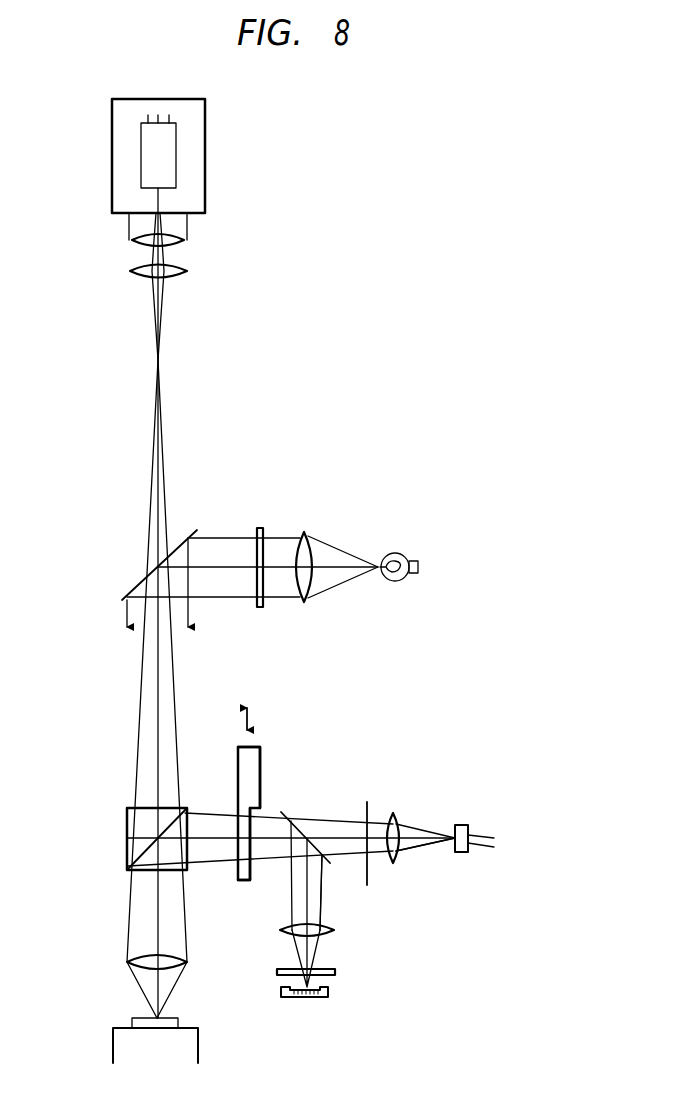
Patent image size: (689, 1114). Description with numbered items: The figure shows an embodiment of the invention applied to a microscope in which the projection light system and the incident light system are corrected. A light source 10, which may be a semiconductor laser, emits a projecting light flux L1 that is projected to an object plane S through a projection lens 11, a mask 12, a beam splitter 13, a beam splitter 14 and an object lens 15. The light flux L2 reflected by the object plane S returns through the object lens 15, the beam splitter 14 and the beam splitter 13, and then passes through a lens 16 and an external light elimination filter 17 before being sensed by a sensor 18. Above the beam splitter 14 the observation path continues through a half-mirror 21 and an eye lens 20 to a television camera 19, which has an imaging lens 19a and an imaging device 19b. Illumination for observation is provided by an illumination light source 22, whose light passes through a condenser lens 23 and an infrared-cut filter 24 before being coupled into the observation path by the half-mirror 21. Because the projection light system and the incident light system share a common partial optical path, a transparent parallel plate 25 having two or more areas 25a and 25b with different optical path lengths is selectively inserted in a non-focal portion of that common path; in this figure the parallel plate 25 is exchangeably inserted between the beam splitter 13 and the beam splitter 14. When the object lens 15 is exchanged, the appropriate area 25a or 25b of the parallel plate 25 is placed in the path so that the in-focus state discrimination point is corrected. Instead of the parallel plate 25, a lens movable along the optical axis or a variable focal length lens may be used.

The light source 10 is at (462, 852).
The projection lens 11 is at (398, 815).
The mask 12 is at (367, 802).
The beam splitter 13 is at (283, 812).
The beam splitter 14 is at (150, 840).
The object lens 15 is at (130, 960).
The lens 16 is at (280, 930).
The external light elimination filter 17 is at (336, 972).
The sensor 18 is at (330, 995).
The television camera 19 is at (205, 177).
The imaging lens 19a is at (133, 243).
The imaging device 19b is at (141, 155).
The eye lens 20 is at (135, 279).
The half-mirror 21 is at (137, 590).
The illumination light source 22 is at (400, 582).
The condenser lens 23 is at (303, 538).
The infrared-cut filter 24 is at (258, 535).
The transparent parallel plate 25 is at (259, 750).
The area 25a is at (240, 878).
The area 25b is at (259, 772).
The projecting light flux L1 is at (420, 847).
The reflected light flux L2 is at (322, 900).
The object plane S is at (132, 1022).